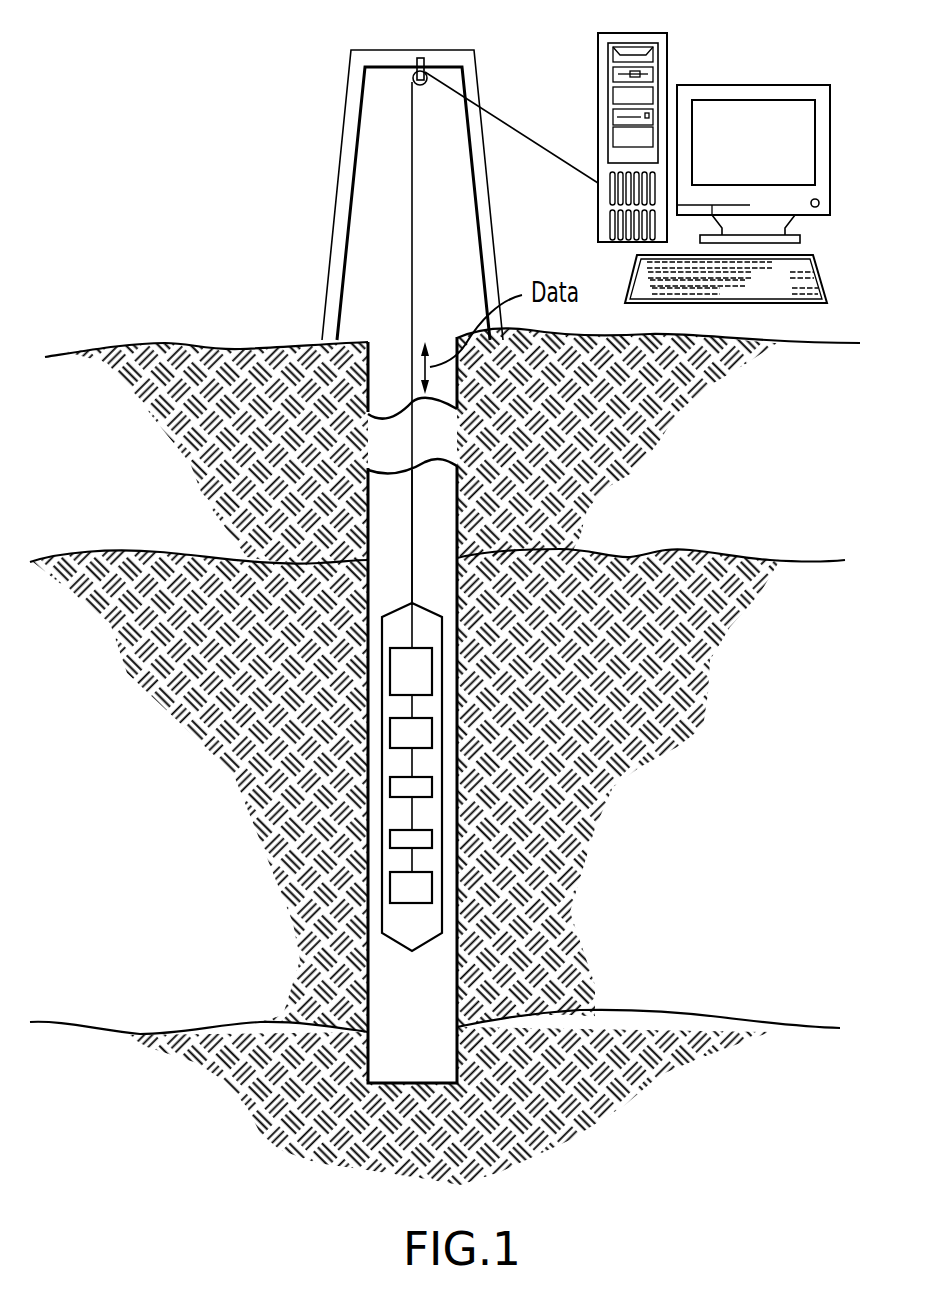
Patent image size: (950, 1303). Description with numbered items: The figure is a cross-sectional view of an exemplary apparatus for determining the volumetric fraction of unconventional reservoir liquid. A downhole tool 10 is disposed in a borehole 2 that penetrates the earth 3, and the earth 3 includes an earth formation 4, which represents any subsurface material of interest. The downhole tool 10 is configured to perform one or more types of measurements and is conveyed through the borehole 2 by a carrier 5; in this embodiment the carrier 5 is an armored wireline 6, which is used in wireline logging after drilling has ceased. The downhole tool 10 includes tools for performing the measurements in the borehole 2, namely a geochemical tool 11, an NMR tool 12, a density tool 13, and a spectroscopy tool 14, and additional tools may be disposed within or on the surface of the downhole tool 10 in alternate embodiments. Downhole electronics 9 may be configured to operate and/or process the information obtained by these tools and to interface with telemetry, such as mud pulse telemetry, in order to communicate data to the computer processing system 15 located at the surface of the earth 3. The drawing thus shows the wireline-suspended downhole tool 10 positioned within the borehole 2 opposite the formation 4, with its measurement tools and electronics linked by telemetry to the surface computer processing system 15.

The borehole 2 is at (390, 356).
The earth 3 is at (452, 445).
The earth formation 4 is at (437, 867).
The carrier 5 is at (412, 497).
The armored wireline 6 is at (412, 521).
The downhole electronics 9 is at (420, 687).
The downhole tool 10 is at (380, 640).
The geochemical tool 11 is at (433, 738).
The NMR tool 12 is at (389, 787).
The density tool 13 is at (433, 840).
The spectroscopy tool 14 is at (389, 885).
The computer processing system 15 is at (768, 86).